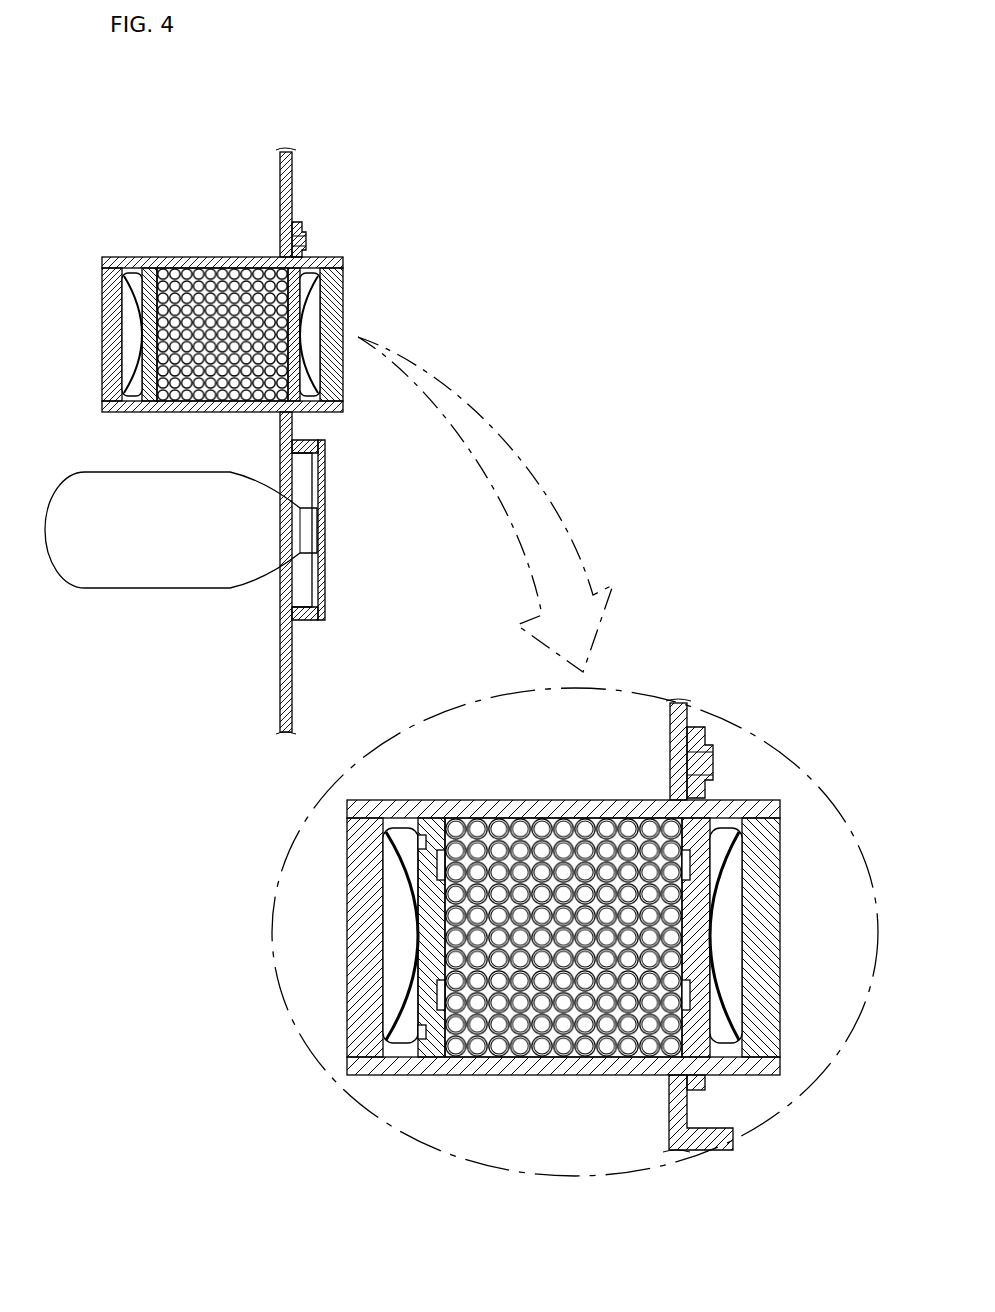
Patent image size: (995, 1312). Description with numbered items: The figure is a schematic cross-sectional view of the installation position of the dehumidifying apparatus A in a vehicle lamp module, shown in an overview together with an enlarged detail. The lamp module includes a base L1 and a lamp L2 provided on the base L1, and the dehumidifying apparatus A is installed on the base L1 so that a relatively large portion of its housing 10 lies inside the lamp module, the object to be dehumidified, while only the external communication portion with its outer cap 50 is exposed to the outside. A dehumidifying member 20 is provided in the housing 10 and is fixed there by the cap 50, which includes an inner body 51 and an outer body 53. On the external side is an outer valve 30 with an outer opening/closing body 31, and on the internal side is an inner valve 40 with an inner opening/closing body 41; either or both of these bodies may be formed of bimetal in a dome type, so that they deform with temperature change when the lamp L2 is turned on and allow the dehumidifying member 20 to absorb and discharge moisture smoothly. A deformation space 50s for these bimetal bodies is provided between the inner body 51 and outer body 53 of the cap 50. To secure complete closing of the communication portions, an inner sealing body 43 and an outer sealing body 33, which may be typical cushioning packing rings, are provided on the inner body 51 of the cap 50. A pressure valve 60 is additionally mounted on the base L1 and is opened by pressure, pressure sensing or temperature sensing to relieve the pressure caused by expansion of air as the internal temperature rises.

The housing 10 is at (530, 800).
The dehumidifying member 20 is at (604, 842).
The outer valve 30 is at (926, 846).
The outer opening/closing body 31 is at (718, 895).
The outer sealing body 33 is at (712, 840).
The inner valve 40 is at (215, 820).
The inner opening/closing body 41 is at (400, 856).
The inner sealing body 43 is at (415, 837).
The cap 50 is at (215, 1040).
The deformation space 50s is at (405, 940).
The inner body 51 is at (380, 1068).
The outer body 53 is at (400, 1034).
The pressure valve 60 is at (714, 752).
The dehumidifying apparatus A is at (404, 800).
The base L1 is at (293, 200).
The lamp L2 is at (158, 592).